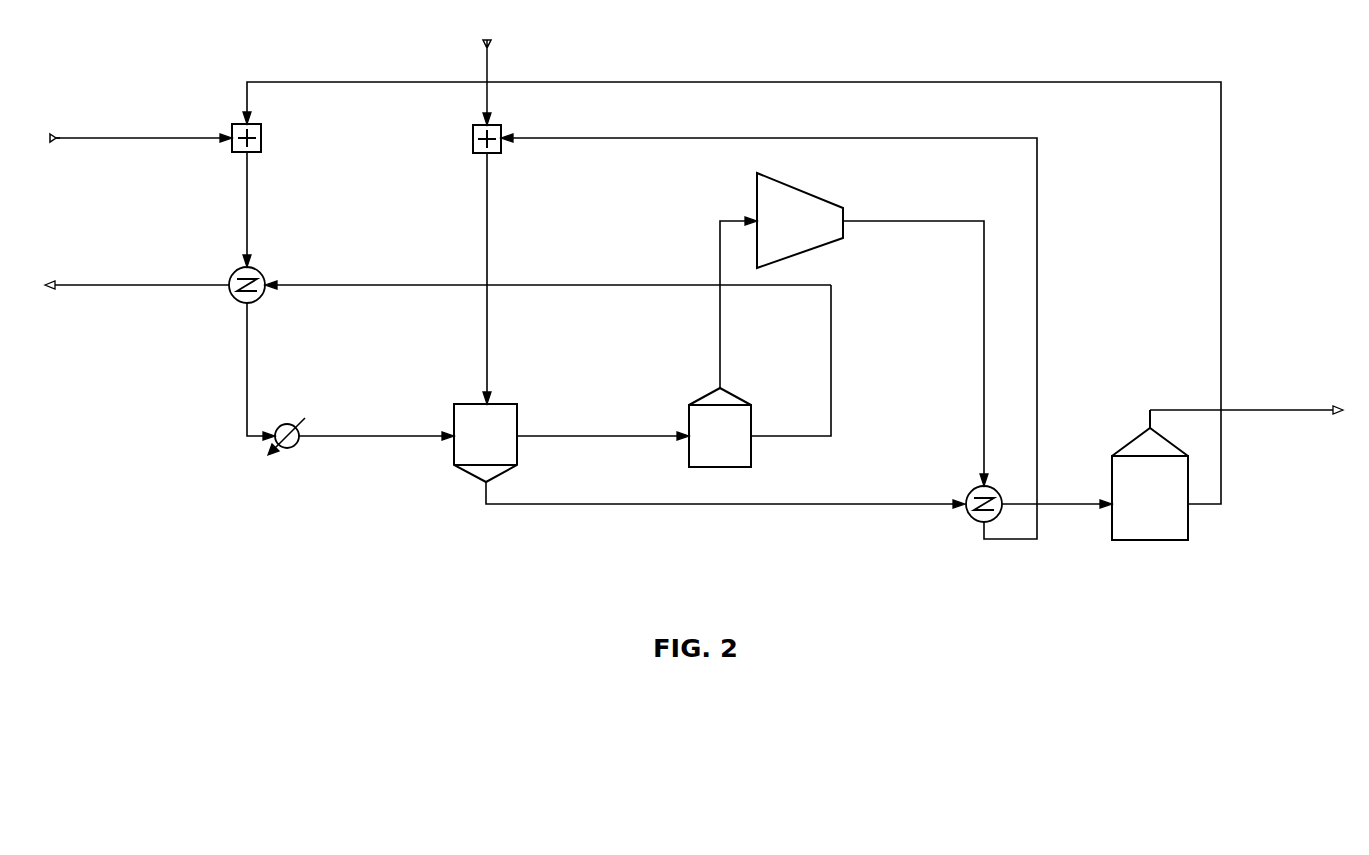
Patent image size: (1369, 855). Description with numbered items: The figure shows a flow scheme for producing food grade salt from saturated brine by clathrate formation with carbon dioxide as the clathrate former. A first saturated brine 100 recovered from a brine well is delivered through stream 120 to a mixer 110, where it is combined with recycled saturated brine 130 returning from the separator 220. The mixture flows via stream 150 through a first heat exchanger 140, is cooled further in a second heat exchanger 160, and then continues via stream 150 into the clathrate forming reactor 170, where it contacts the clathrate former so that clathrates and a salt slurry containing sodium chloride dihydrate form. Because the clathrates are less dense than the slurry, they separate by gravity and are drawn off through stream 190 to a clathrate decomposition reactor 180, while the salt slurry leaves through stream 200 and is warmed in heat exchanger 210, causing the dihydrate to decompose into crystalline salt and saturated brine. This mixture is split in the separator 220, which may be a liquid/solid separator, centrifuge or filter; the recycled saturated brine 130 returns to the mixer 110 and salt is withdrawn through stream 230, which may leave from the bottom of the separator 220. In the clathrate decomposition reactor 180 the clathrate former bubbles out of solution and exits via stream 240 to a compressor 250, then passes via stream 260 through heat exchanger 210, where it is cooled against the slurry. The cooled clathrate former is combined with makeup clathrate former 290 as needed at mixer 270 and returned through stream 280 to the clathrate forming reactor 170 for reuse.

The first saturated brine 100 is at (57, 136).
The mixer 110 is at (262, 138).
The stream 120 is at (134, 138).
The recycled saturated brine 130 is at (1154, 83).
The first heat exchanger 140 is at (263, 276).
The stream 150 is at (247, 208).
The second heat exchanger 160 is at (290, 450).
The clathrate forming reactor 170 is at (459, 453).
The clathrate decomposition reactor 180 is at (695, 456).
The stream 190 is at (604, 436).
The stream 200 is at (733, 504).
The heat exchanger 210 is at (962, 515).
The separator 220 is at (1193, 528).
The stream 230 is at (1253, 410).
The stream 240 is at (720, 340).
The compressor 250 is at (799, 187).
The stream 260 is at (985, 354).
The mixer 270 is at (503, 149).
The stream 280 is at (488, 249).
The makeup clathrate former 290 is at (491, 46).